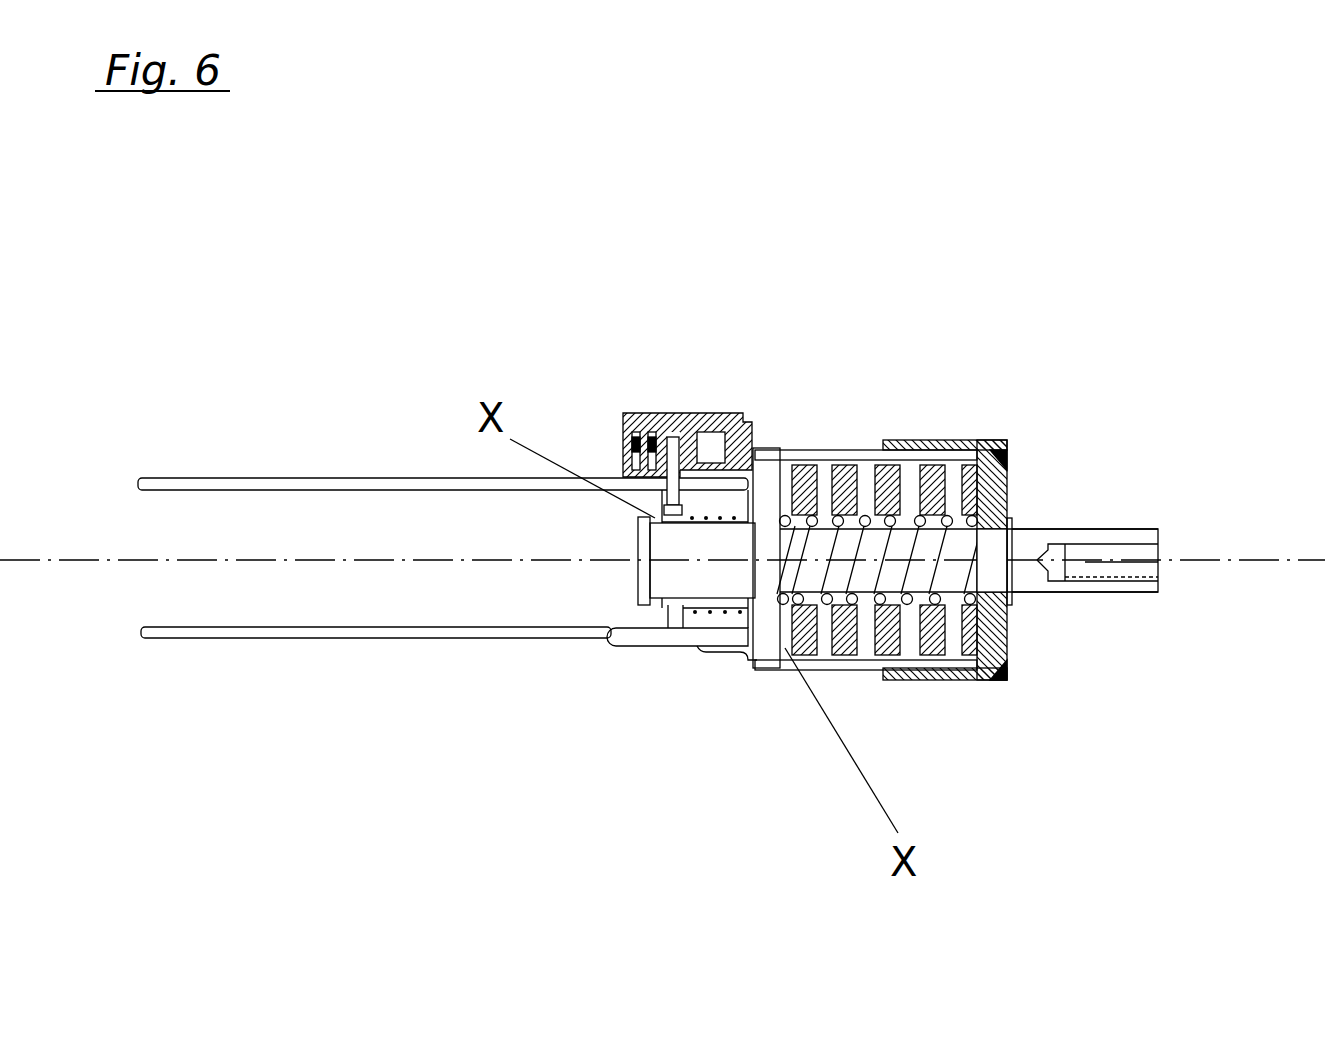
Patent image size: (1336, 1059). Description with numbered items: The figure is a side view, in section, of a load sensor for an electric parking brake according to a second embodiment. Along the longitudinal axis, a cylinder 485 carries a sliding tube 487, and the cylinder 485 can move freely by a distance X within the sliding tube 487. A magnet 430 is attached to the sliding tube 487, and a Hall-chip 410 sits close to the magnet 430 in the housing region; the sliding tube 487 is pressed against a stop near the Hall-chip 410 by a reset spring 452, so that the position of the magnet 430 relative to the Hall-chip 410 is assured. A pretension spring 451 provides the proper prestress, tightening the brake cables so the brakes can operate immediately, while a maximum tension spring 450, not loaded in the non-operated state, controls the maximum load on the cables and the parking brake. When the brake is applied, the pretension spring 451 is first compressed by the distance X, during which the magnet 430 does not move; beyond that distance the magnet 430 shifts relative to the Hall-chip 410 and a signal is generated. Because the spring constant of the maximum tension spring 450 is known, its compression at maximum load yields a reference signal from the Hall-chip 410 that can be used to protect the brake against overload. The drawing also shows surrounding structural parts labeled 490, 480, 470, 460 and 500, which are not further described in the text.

The Hall-chip 410 is at (637, 437).
The magnet 430 is at (658, 437).
The housing with bolt 490 is at (700, 427).
The flange plate 480 is at (770, 465).
The upper cylinder wall 470 is at (858, 447).
The output shaft 460 is at (1133, 553).
The cylinder 485 is at (650, 568).
The sliding tube 487 is at (668, 612).
The connecting plate 500 is at (696, 648).
The reset spring 452 is at (715, 612).
The maximum tension spring 450 is at (917, 645).
The pretension spring 451 is at (988, 675).